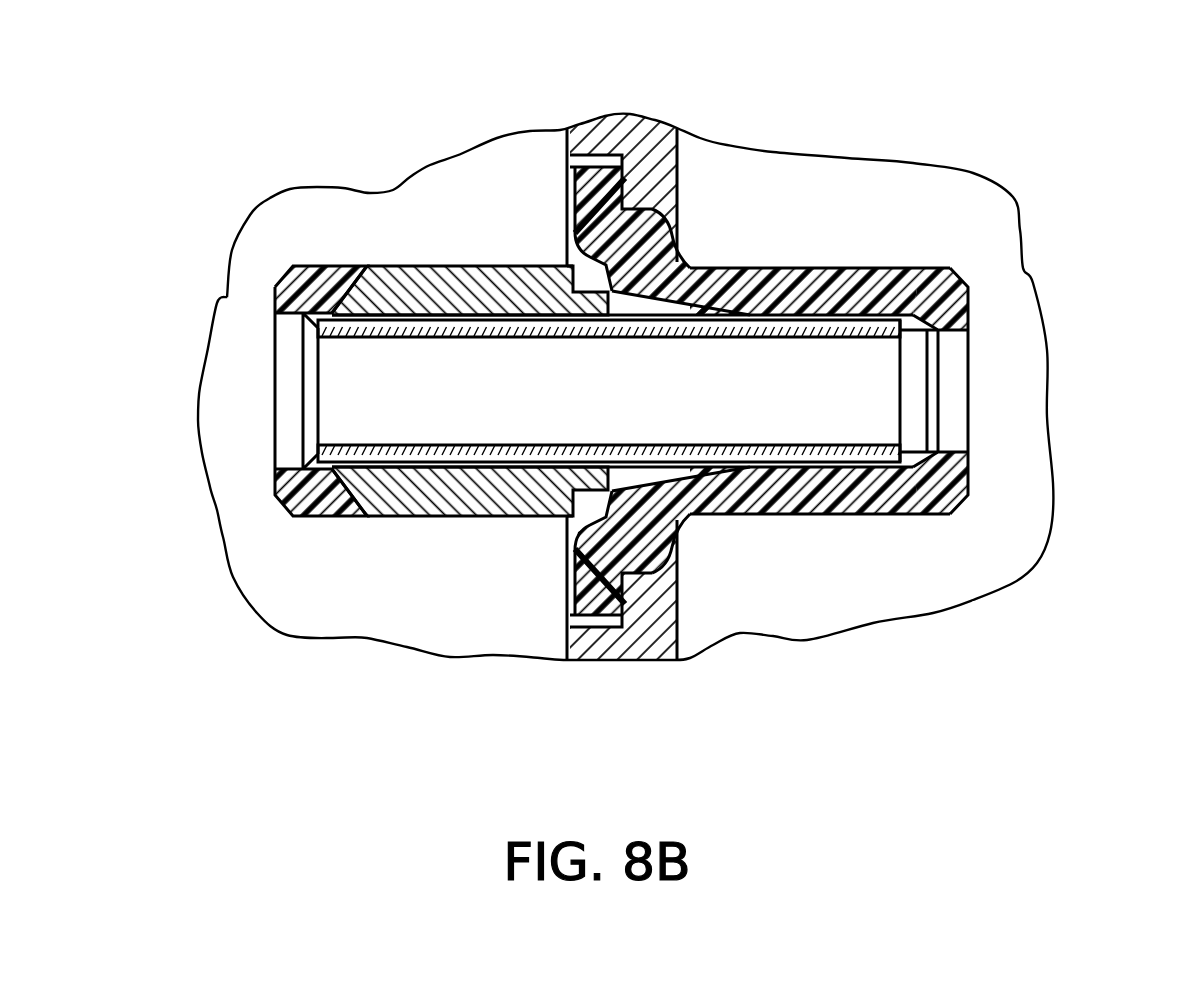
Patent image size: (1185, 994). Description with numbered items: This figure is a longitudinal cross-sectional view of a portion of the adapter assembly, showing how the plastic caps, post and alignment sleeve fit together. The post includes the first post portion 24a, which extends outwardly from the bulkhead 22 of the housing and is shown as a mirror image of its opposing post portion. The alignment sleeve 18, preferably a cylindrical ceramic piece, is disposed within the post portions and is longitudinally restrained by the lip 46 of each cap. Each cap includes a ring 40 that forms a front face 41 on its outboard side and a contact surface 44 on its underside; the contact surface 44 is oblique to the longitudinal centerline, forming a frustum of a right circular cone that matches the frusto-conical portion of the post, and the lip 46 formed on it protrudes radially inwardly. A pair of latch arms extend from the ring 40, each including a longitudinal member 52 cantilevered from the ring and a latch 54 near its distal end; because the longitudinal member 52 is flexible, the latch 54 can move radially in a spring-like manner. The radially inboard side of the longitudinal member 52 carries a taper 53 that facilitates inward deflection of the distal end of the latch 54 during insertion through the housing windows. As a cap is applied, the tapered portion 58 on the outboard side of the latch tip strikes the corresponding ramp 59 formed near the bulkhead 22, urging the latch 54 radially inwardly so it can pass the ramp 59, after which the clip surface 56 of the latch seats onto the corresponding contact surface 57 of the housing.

The alignment sleeve 18 is at (460, 455).
The bulkhead 22 is at (627, 155).
The first post portion 24a is at (403, 273).
The ring 40 is at (933, 517).
The front face 41 is at (277, 303).
The contact surface 44 is at (348, 450).
The lip 46 is at (933, 458).
The longitudinal member 52 is at (887, 268).
The taper 53 is at (713, 268).
The latch 54 is at (578, 202).
The clip surface 56 is at (655, 198).
The contact surface 57 is at (625, 207).
The tapered portion 58 is at (592, 160).
The ramp 59 is at (640, 207).